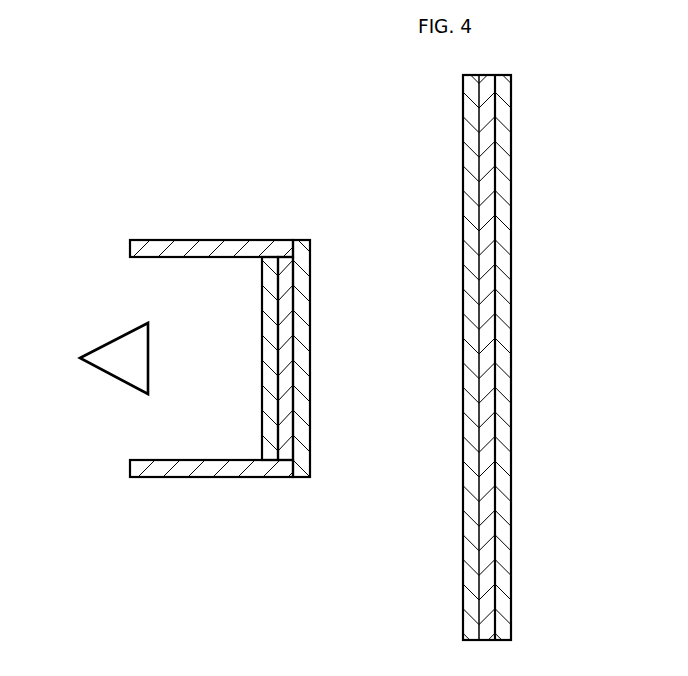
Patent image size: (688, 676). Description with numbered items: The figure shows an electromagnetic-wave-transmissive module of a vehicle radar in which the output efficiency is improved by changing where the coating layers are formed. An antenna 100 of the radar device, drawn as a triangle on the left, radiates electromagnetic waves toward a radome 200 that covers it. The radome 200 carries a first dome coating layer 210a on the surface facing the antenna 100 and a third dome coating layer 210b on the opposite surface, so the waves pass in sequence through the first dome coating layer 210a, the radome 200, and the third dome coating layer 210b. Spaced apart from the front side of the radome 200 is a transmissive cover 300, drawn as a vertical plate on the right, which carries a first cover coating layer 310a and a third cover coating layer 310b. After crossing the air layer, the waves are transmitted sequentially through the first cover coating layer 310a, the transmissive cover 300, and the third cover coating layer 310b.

The antenna 100 is at (113, 338).
The radome 200 is at (243, 372).
The first dome coating layer 210a is at (265, 425).
The third dome coating layer 210b is at (300, 425).
The transmissive cover 300 is at (485, 358).
The first cover coating layer 310a is at (463, 156).
The third cover coating layer 310b is at (505, 295).